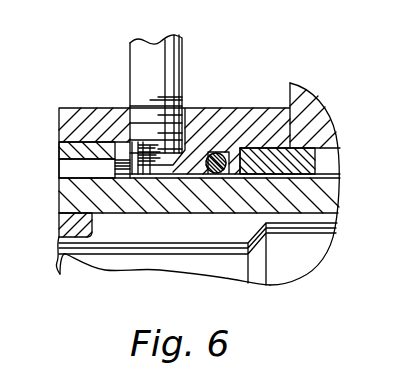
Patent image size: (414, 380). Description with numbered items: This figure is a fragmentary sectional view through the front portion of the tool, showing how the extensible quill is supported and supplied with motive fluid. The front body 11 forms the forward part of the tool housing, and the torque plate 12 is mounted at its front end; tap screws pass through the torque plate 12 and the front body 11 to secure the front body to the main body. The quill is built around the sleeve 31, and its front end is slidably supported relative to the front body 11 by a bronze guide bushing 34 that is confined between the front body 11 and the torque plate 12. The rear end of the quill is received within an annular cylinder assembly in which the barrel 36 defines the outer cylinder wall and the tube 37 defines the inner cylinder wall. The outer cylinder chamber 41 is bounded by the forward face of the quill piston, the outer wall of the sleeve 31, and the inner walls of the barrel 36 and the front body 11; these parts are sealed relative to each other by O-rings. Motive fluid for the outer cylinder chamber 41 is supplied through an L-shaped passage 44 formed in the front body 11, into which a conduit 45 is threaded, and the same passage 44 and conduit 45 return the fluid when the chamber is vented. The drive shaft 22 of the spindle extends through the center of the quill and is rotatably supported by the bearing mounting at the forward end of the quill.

The front body 11 is at (232, 115).
The torque plate 12 is at (309, 102).
The drive shaft 22 is at (300, 250).
The sleeve 31 is at (173, 202).
The guide bushing 34 is at (262, 153).
The barrel 36 is at (78, 147).
The tube 37 is at (63, 230).
The outer cylinder chamber 41 is at (68, 170).
The L-shaped passage 44 is at (155, 162).
The conduit 45 is at (174, 66).